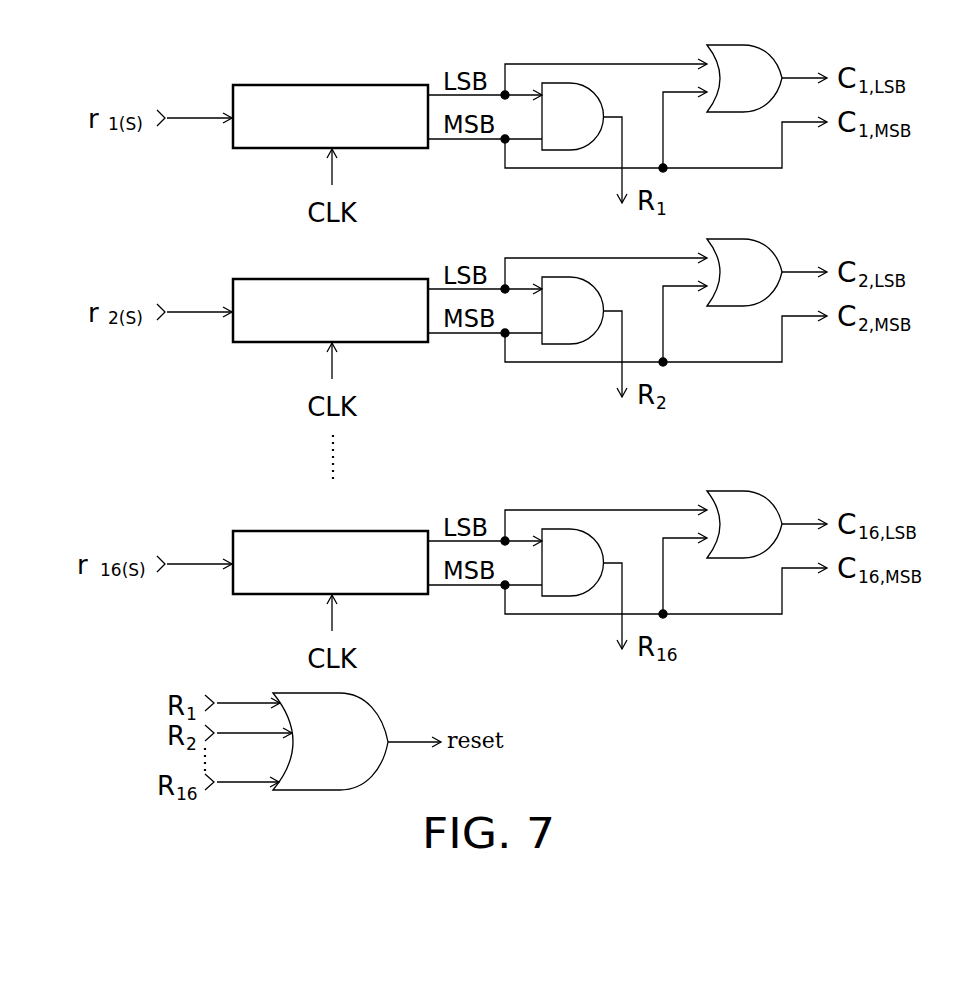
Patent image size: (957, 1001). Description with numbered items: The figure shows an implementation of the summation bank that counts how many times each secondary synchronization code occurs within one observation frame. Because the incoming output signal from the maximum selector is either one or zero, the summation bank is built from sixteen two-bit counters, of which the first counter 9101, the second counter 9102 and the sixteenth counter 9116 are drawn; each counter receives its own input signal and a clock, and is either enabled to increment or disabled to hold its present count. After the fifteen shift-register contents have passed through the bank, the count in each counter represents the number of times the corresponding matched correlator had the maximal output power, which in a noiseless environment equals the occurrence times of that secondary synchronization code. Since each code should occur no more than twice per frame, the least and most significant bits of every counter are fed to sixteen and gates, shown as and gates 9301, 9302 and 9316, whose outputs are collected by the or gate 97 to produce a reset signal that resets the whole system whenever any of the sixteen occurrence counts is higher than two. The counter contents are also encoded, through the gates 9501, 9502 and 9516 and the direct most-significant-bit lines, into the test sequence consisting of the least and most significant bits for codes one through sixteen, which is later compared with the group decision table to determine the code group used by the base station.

The 2-bit counter 9101 is at (262, 85).
The 2-bit counter 9102 is at (262, 279).
The 2-bit counter 9116 is at (262, 531).
The and gate 9301 is at (558, 83).
The and gate 9302 is at (558, 277).
The and gate 9316 is at (558, 529).
The or gate 9501 is at (767, 53).
The or gate 9502 is at (767, 247).
The or gate 9516 is at (767, 499).
The or gate 97 is at (375, 713).